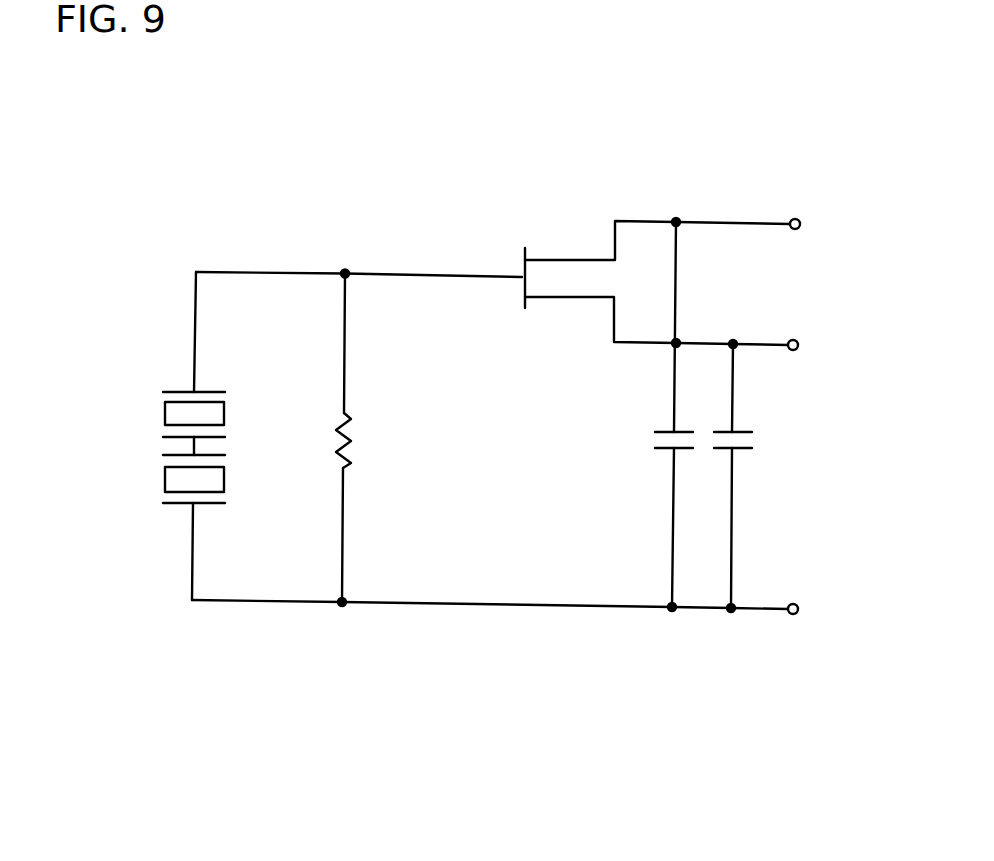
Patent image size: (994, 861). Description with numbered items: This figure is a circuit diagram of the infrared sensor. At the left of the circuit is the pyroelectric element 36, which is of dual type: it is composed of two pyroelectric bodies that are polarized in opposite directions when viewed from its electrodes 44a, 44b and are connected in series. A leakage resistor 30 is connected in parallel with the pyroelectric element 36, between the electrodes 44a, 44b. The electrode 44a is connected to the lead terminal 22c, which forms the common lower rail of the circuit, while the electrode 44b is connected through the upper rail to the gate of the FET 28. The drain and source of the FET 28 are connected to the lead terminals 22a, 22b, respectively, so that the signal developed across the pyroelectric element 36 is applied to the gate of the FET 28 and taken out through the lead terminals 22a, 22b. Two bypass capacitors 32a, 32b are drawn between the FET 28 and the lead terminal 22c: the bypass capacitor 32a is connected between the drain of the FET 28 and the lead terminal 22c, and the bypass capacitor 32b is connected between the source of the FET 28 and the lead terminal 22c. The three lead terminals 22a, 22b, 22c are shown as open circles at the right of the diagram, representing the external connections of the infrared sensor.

The lead terminal 22a is at (795, 217).
The lead terminal 22b is at (797, 350).
The lead terminal 22c is at (793, 615).
The FET 28 is at (512, 264).
The leakage resistor 30 is at (343, 420).
The bypass capacitor 32a is at (663, 430).
The bypass capacitor 32b is at (745, 430).
The pyroelectric element 36 is at (209, 441).
The electrode 44a is at (172, 504).
The electrode 44b is at (172, 390).